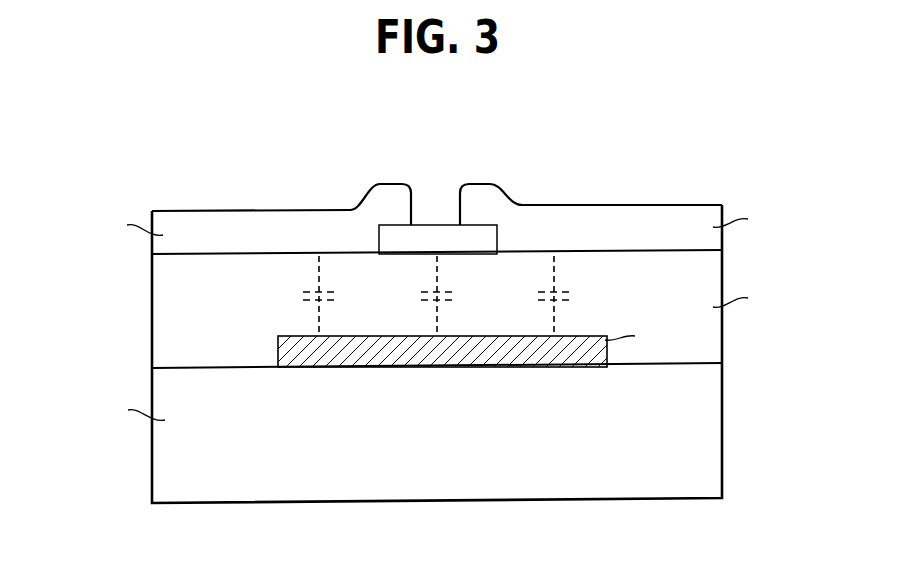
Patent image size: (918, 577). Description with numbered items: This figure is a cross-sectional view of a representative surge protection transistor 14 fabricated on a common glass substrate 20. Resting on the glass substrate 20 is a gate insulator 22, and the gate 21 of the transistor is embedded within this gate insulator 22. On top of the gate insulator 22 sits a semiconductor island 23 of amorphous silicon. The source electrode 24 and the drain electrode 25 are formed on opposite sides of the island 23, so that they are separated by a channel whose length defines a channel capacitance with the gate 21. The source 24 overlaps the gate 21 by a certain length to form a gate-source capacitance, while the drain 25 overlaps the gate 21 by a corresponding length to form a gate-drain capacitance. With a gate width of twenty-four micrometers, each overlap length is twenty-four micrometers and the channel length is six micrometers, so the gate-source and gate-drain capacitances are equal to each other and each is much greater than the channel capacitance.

The surge protection transistor 14 is at (447, 114).
The glass substrate 20 is at (432, 498).
The gate 21 is at (428, 355).
The gate insulator 22 is at (165, 325).
The semiconductor island 23 is at (433, 228).
The source electrode 24 is at (256, 214).
The drain electrode 25 is at (608, 212).